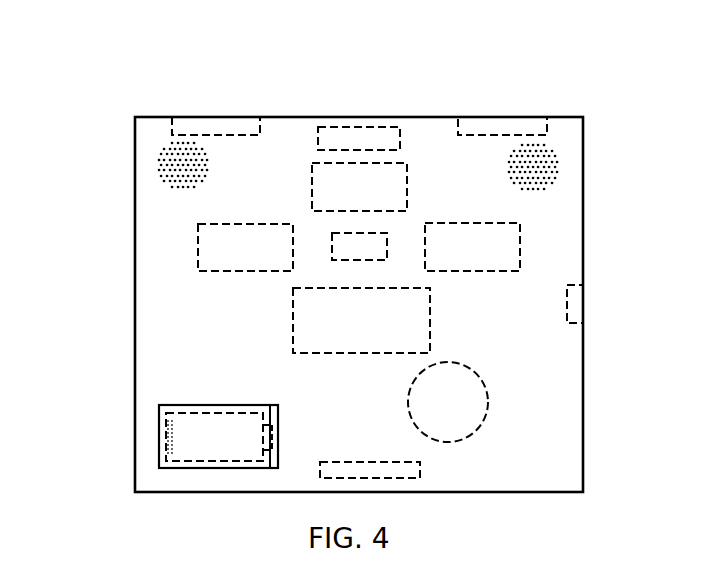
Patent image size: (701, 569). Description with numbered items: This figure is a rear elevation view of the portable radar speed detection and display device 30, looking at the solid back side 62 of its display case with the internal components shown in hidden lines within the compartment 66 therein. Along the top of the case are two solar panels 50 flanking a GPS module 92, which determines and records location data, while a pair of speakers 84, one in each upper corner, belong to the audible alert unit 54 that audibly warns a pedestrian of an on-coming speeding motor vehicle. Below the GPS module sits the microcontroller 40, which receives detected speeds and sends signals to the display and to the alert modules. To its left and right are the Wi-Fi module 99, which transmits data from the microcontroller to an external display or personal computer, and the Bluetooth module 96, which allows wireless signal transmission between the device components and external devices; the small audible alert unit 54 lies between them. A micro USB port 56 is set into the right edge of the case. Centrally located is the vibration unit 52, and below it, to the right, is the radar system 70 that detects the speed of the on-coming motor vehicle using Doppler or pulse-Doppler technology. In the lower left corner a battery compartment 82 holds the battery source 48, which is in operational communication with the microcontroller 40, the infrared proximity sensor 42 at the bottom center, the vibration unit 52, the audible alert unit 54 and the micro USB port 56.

The portable radar speed detection and display device 30 is at (418, 117).
The solar panel 50 is at (216, 125).
The GPS module 92 is at (357, 132).
The speakers 84 is at (173, 163).
The microcontroller 40 is at (312, 188).
The solid back side 62 is at (557, 208).
The Wi-Fi module 99 is at (202, 233).
The audible alert unit 54 is at (332, 251).
The Bluetooth module 96 is at (520, 248).
The micro USB port 56 is at (577, 297).
The vibration unit 52 is at (297, 318).
The compartment 66 is at (165, 385).
The radar system 70 is at (487, 395).
The battery compartment 82 is at (161, 478).
The battery source 48 is at (202, 447).
The infrared proximity sensor 42 is at (410, 472).